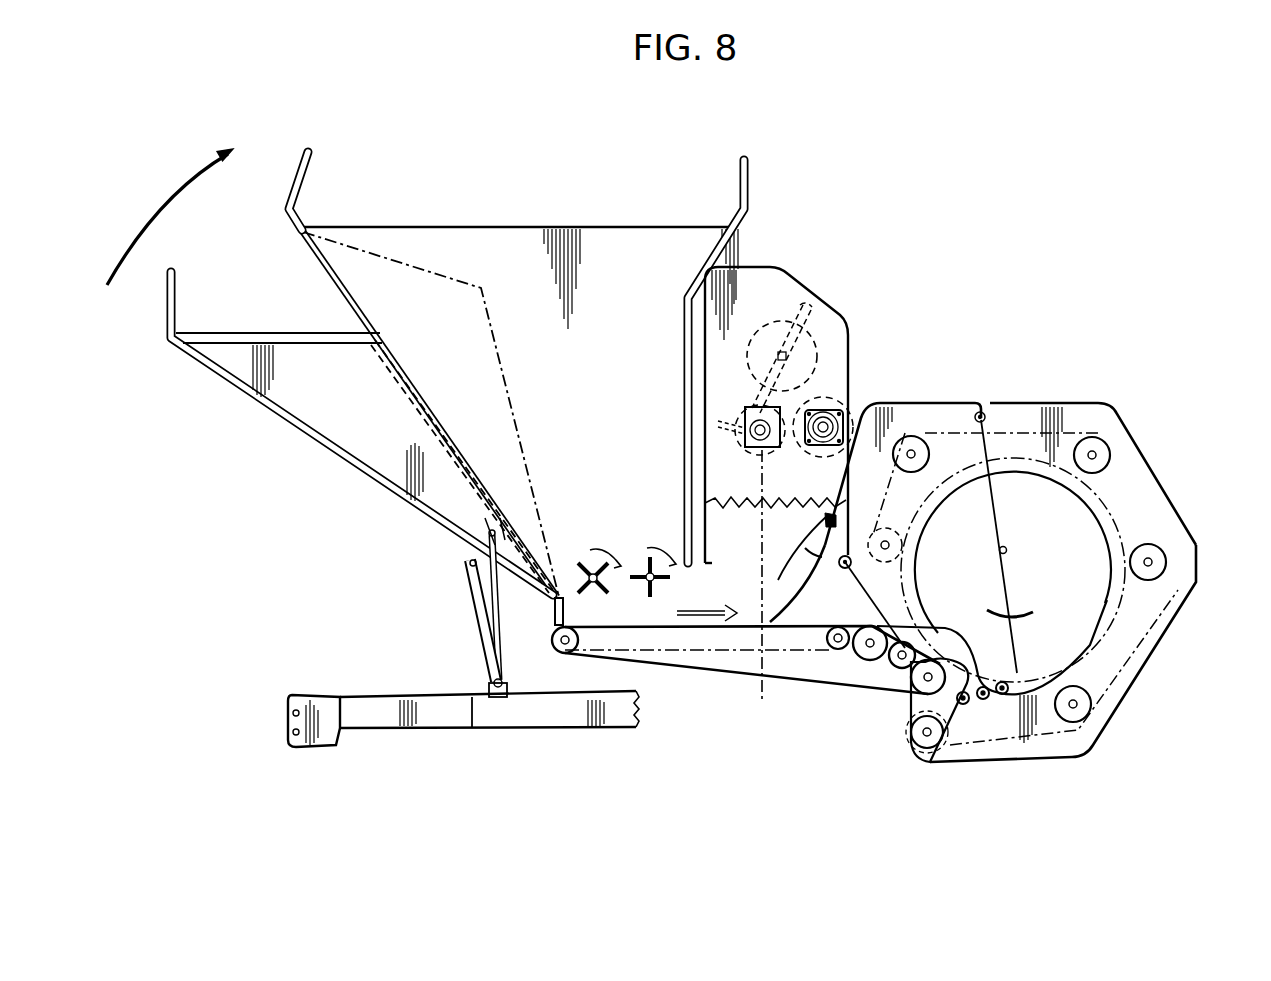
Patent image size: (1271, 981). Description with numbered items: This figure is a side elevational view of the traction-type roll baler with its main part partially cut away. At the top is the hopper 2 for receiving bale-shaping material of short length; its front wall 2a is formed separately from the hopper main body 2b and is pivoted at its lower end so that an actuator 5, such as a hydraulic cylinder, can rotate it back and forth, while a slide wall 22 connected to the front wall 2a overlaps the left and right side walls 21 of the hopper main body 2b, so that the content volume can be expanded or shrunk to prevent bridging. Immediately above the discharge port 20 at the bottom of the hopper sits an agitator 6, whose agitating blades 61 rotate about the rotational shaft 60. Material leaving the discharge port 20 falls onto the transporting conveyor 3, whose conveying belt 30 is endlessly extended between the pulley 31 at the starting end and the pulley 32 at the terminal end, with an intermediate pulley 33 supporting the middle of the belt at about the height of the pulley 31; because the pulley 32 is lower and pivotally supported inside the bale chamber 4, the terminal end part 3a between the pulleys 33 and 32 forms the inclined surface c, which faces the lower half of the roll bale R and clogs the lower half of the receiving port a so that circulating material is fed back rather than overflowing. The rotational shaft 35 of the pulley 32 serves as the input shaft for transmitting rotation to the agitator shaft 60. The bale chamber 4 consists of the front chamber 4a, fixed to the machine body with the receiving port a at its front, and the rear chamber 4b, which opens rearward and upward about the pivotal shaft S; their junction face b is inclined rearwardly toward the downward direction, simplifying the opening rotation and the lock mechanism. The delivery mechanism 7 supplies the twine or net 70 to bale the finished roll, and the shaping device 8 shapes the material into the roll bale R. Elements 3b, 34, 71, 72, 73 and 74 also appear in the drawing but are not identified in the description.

The hopper 2 is at (474, 447).
The front wall 2a is at (208, 370).
The hopper main body 2b is at (725, 248).
The side walls 21 is at (608, 252).
The slide wall 22 is at (308, 387).
The discharge port 20 is at (622, 600).
The transporting conveyor 3 is at (738, 731).
The terminal end part 3a is at (910, 668).
The conveyor belt lower run 3b is at (560, 655).
The conveying belt 30 is at (712, 628).
The pulley at the starting end 31 is at (558, 650).
The pulley at the terminal end 32 is at (935, 683).
The intermediate pulley 33 is at (870, 661).
The conveyor roller 34 is at (834, 648).
The rotational shaft 35 is at (928, 740).
The bale chamber 4 is at (996, 562).
The front chamber 4a is at (953, 410).
The rear chamber 4b is at (1045, 403).
The actuator 5 is at (483, 607).
The agitator 6 is at (612, 519).
The rotational shaft 60 is at (593, 575).
The agitating blades 61 is at (580, 565).
The delivery mechanism 7 is at (811, 413).
The twine or net 70 is at (848, 568).
The drive shaft 71 is at (778, 580).
The bracket 72 is at (870, 438).
The motor 73 is at (782, 452).
The motor 74 is at (855, 388).
The shaping device 8 is at (1118, 455).
The pivotal shaft S is at (985, 412).
The receiving port a is at (867, 608).
The junction face b is at (1005, 551).
The inclined surface c is at (980, 693).
The roll bale R is at (1100, 617).